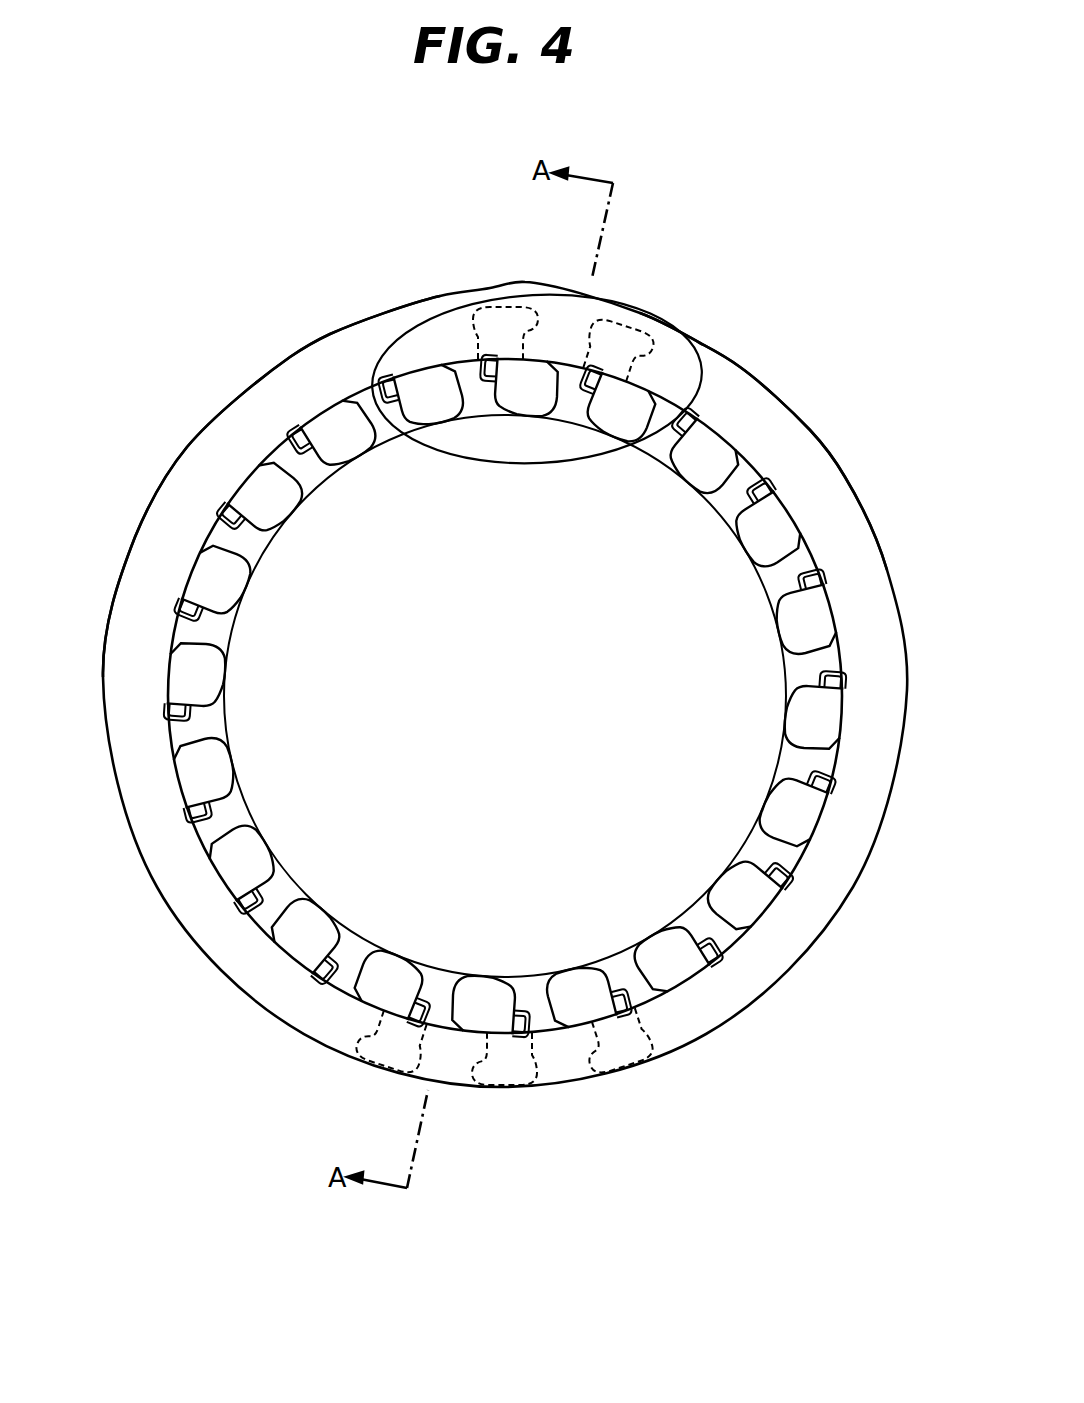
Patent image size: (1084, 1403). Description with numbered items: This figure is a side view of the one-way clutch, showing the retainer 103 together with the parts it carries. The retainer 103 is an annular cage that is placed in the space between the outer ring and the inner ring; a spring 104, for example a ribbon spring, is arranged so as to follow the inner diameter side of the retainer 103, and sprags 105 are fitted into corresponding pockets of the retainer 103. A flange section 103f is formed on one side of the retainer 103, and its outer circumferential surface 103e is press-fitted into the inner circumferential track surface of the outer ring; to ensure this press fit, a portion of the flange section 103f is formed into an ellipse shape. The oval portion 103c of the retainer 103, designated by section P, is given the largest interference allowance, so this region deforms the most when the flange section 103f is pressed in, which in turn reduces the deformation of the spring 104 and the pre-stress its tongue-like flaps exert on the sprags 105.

The retainer 103 is at (720, 355).
The oval portion 103c is at (457, 305).
The outer circumferential surface 103e is at (349, 325).
The flange section 103f is at (797, 433).
The spring 104 is at (492, 385).
The sprags 105 is at (337, 450).
The section P is at (532, 292).